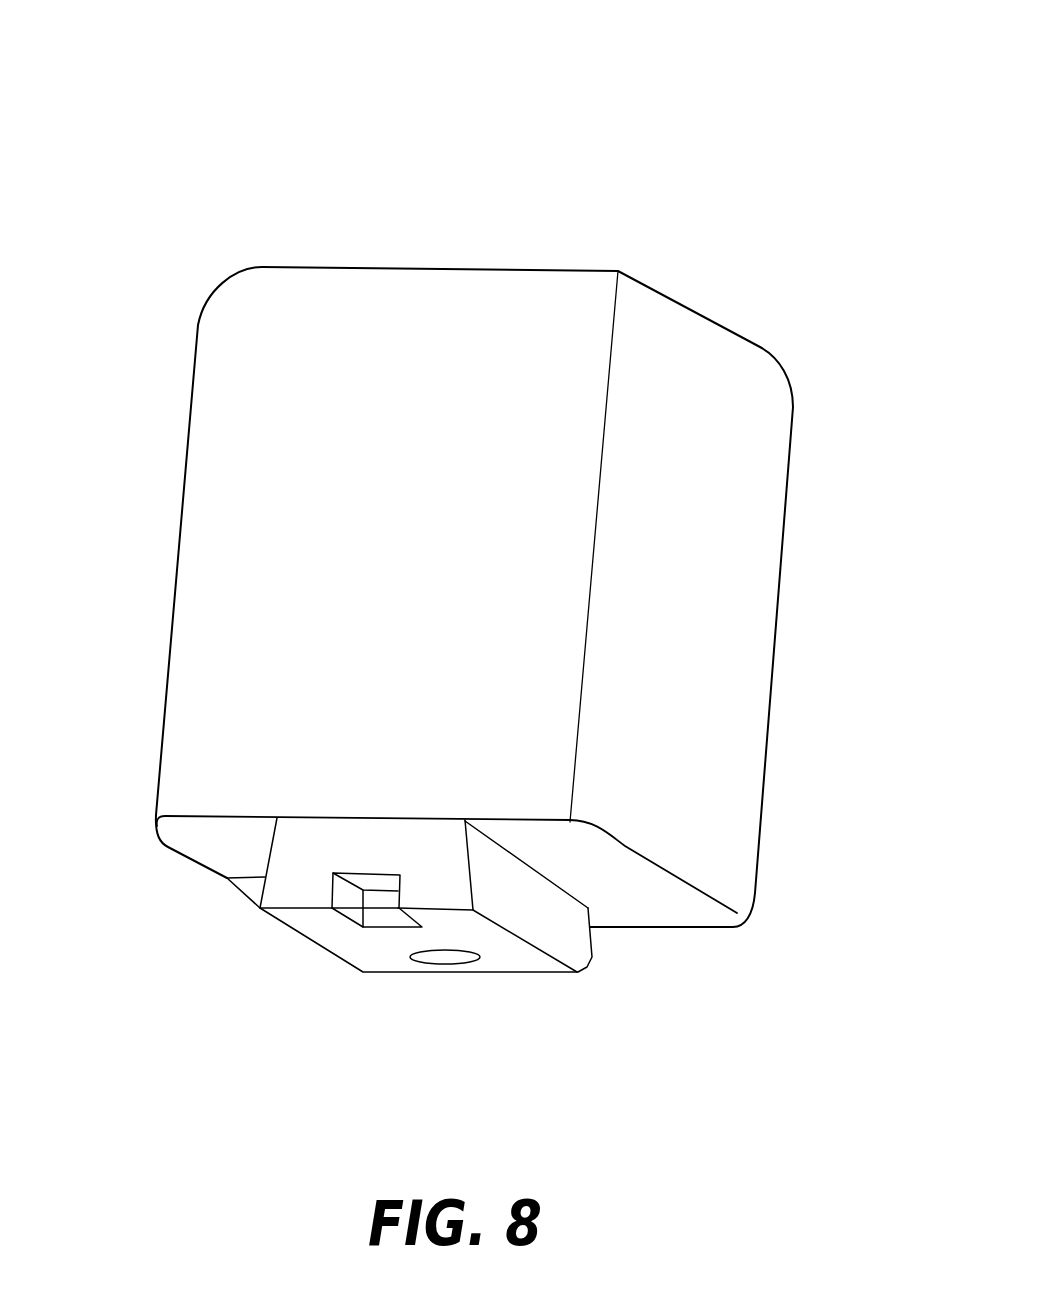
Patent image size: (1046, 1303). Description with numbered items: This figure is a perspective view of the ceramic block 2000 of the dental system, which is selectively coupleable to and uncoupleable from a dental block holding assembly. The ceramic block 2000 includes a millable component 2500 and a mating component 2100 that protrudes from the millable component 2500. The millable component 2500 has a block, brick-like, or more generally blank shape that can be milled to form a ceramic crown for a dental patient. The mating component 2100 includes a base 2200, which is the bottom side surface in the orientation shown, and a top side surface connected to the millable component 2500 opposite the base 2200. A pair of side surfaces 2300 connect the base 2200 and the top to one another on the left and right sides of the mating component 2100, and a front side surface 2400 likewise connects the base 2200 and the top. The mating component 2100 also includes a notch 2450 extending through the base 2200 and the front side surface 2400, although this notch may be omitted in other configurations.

The ceramic block 2000 is at (800, 158).
The millable component 2500 is at (776, 632).
The mating component 2100 is at (634, 988).
The base 2200 is at (360, 952).
The side surfaces 2300 is at (227, 877).
The front side surface 2400 is at (443, 880).
The notch 2450 is at (377, 903).